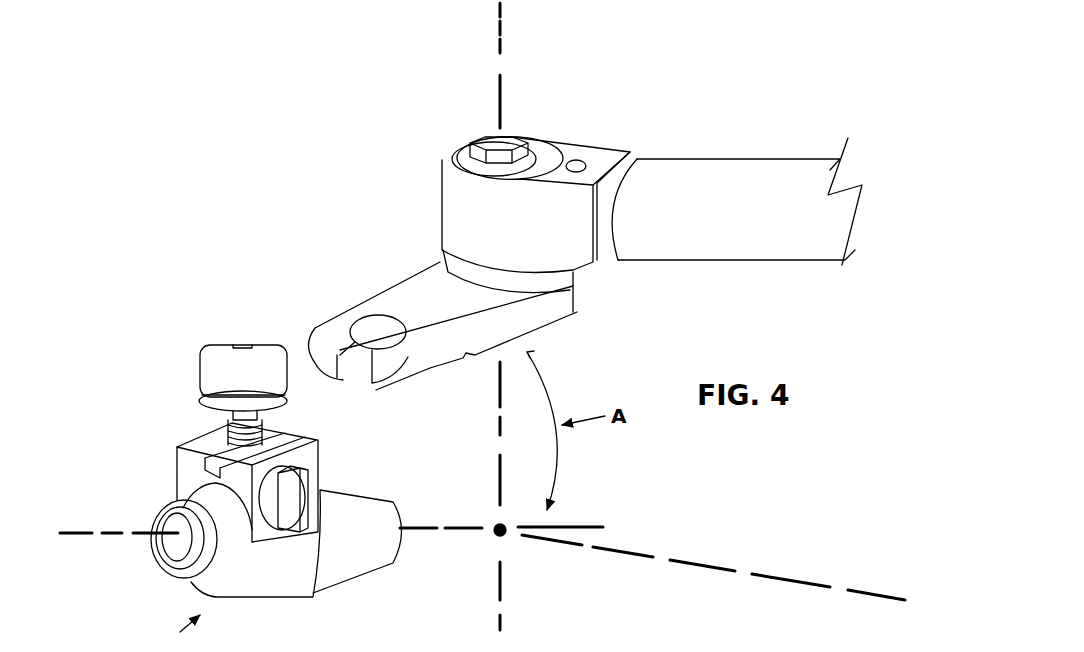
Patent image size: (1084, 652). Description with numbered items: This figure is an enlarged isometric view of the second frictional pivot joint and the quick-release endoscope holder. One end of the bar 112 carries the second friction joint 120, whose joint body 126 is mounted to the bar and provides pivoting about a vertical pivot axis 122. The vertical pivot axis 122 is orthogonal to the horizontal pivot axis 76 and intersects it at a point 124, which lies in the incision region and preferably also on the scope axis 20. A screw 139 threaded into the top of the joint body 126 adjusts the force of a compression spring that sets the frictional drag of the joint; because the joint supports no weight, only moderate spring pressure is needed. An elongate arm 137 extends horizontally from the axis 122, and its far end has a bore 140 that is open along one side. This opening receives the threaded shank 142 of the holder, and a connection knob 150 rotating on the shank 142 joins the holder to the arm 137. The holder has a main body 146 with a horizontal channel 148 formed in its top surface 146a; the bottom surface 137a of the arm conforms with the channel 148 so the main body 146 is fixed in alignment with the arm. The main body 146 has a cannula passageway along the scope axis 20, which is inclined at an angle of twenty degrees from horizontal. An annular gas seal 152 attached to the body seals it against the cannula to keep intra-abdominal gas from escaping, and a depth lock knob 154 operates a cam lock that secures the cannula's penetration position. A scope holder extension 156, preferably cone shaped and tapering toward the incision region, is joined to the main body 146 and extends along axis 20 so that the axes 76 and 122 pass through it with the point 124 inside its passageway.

The scope axis 20 is at (88, 527).
The pivot axis 76 is at (838, 566).
The bar 112 is at (738, 150).
The second friction joint 120 is at (510, 174).
The vertical pivot axis 122 is at (513, 29).
The point 124 is at (515, 545).
The joint body 126 is at (438, 208).
The elongate arm 137 is at (469, 337).
The bottom surface 137a is at (405, 392).
The screw 139 is at (462, 150).
The bore 140 is at (378, 322).
The threaded shank 142 is at (229, 427).
The main body 146 is at (254, 471).
The top surface 146a is at (296, 437).
The horizontal channel 148 is at (219, 457).
The connection knob 150 is at (222, 367).
The annular gas seal 152 is at (168, 563).
The depth lock knob 154 is at (312, 487).
The scope holder extension 156 is at (355, 561).